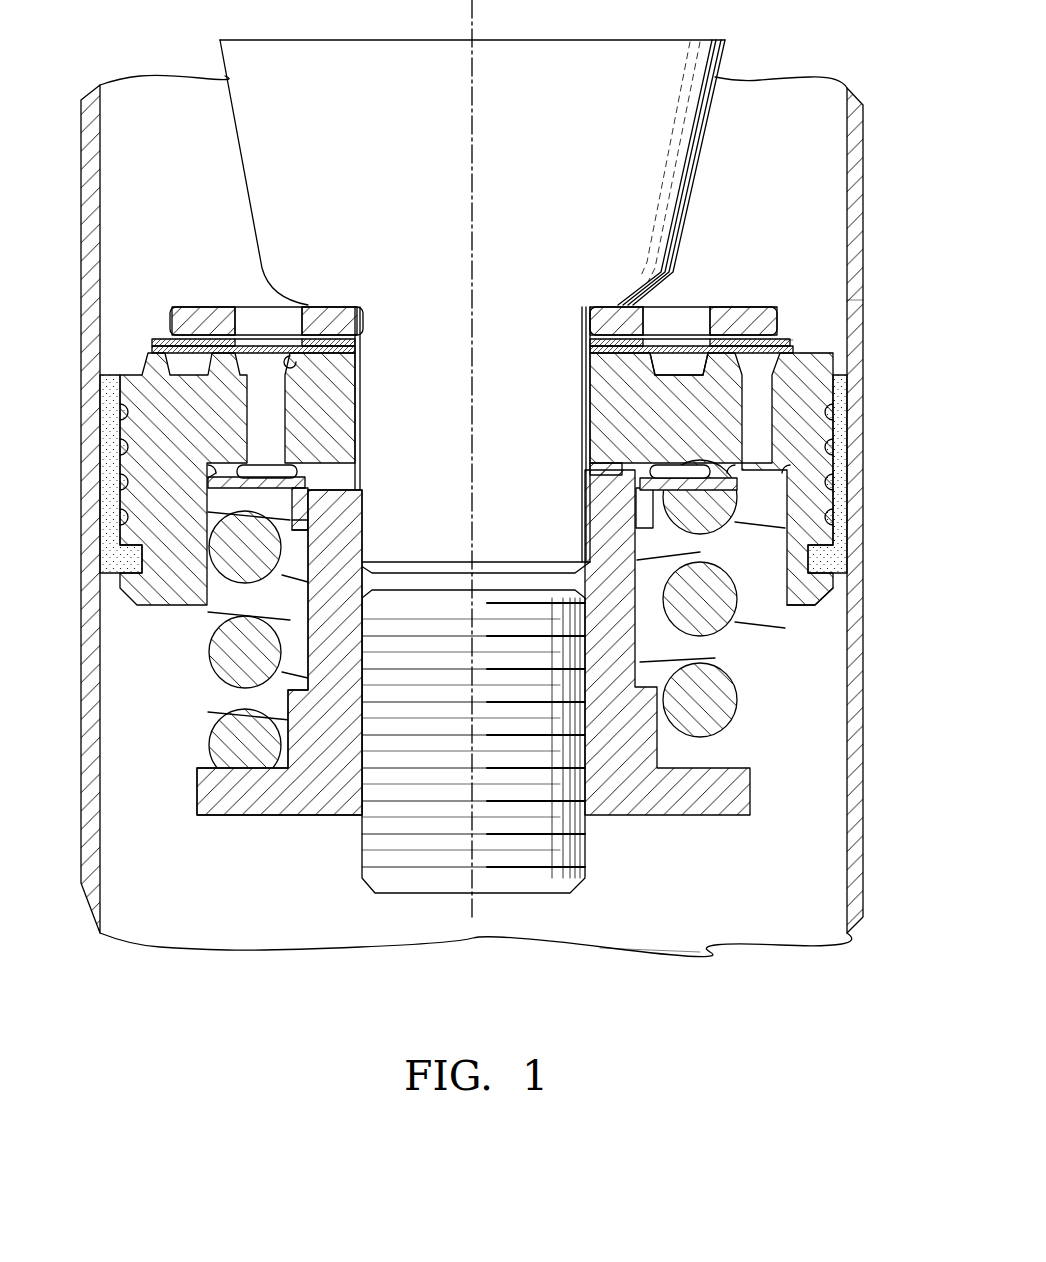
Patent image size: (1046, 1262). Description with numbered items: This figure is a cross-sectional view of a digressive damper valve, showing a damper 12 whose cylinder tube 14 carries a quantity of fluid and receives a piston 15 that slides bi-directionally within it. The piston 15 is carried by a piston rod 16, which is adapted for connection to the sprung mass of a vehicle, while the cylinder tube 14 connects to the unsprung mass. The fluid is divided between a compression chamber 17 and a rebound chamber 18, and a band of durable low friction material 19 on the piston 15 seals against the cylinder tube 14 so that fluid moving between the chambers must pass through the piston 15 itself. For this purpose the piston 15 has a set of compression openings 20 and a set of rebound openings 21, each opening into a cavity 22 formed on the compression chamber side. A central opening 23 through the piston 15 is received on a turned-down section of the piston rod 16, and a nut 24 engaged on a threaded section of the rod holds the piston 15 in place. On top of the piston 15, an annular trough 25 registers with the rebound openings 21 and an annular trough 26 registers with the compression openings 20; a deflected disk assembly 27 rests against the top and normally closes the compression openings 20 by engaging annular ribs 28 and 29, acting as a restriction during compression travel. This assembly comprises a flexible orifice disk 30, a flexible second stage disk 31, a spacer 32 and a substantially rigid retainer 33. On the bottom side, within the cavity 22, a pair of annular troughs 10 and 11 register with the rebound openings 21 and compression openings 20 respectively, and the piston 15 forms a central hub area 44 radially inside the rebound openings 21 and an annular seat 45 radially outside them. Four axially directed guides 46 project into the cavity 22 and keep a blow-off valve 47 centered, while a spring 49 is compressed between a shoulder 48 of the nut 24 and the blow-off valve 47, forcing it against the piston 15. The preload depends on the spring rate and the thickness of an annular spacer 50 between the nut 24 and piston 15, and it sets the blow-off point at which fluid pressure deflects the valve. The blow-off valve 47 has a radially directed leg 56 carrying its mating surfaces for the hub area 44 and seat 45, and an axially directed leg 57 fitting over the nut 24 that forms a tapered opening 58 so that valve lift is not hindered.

The annular trough 10 is at (735, 470).
The annular trough 11 is at (790, 470).
The damper 12 is at (866, 183).
The cylinder tube 14 is at (857, 103).
The piston 15 is at (806, 367).
The piston rod 16 is at (561, 134).
The compression chamber 17 is at (690, 919).
The rebound chamber 18 is at (743, 162).
The band of durable low friction material 19 is at (840, 452).
The compression openings 20 is at (768, 418).
The rebound openings 21 is at (252, 445).
The cavity 22 is at (786, 600).
The central opening 23 is at (588, 398).
The nut 24 is at (620, 805).
The annular trough 25 is at (300, 360).
The annular trough 26 is at (758, 350).
The deflected disk assembly 27 is at (790, 333).
The annular rib 28 is at (720, 350).
The annular rib 29 is at (810, 348).
The orifice disk 30 is at (152, 347).
The second stage disk 31 is at (160, 340).
The spacer 32 is at (330, 333).
The retainer 33 is at (215, 312).
The central hub area 44 is at (300, 480).
The annular seat 45 is at (210, 476).
The axially directed guides 46 is at (215, 600).
The blow-off valve 47 is at (677, 485).
The shoulder 48 is at (205, 790).
The spring 49 is at (228, 665).
The annular spacer 50 is at (618, 473).
The radially directed leg 56 is at (262, 480).
The axially directed leg 57 is at (309, 497).
The tapered opening 58 is at (300, 528).